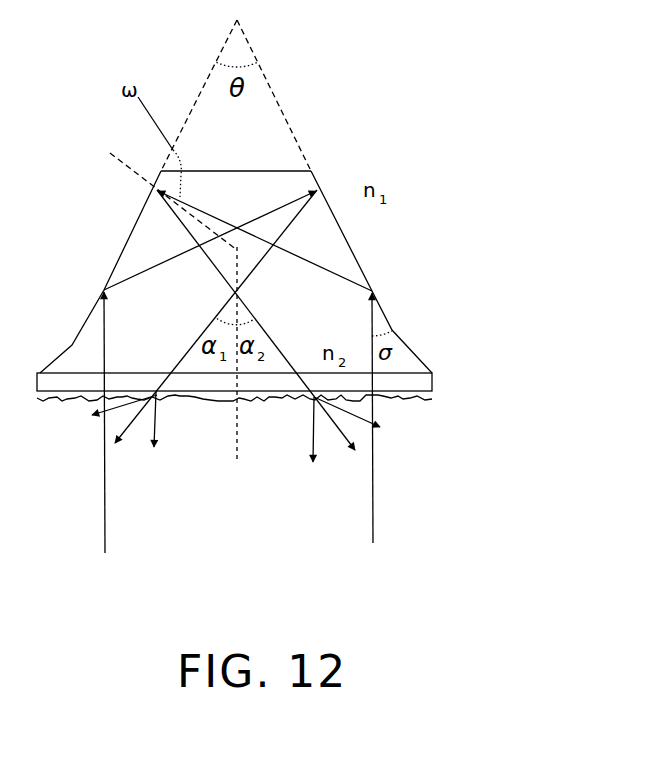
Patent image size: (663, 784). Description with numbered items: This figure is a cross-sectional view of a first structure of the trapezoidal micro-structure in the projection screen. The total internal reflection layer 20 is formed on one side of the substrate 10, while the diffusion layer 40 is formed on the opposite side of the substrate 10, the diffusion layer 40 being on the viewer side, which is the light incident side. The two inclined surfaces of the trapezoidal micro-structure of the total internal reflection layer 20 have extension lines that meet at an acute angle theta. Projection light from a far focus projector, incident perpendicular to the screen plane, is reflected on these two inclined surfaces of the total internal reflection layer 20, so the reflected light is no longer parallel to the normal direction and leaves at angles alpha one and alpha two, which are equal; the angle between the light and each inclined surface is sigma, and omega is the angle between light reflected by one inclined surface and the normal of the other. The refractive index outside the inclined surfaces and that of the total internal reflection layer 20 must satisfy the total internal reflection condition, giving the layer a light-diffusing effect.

The substrate 10 is at (432, 379).
The total internal reflection layer 20 is at (344, 237).
The diffusion layer 40 is at (433, 395).